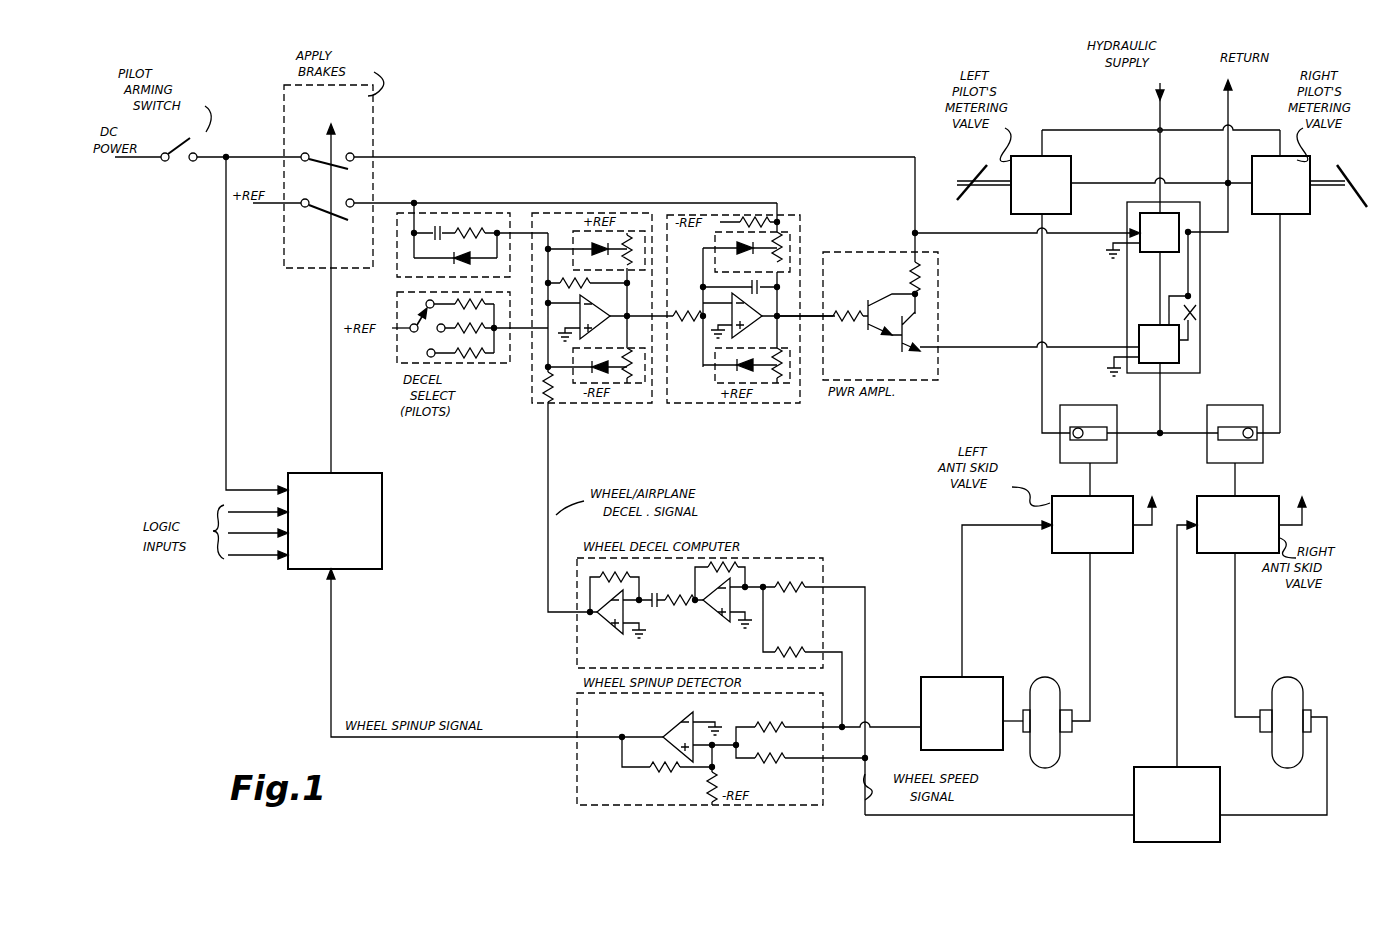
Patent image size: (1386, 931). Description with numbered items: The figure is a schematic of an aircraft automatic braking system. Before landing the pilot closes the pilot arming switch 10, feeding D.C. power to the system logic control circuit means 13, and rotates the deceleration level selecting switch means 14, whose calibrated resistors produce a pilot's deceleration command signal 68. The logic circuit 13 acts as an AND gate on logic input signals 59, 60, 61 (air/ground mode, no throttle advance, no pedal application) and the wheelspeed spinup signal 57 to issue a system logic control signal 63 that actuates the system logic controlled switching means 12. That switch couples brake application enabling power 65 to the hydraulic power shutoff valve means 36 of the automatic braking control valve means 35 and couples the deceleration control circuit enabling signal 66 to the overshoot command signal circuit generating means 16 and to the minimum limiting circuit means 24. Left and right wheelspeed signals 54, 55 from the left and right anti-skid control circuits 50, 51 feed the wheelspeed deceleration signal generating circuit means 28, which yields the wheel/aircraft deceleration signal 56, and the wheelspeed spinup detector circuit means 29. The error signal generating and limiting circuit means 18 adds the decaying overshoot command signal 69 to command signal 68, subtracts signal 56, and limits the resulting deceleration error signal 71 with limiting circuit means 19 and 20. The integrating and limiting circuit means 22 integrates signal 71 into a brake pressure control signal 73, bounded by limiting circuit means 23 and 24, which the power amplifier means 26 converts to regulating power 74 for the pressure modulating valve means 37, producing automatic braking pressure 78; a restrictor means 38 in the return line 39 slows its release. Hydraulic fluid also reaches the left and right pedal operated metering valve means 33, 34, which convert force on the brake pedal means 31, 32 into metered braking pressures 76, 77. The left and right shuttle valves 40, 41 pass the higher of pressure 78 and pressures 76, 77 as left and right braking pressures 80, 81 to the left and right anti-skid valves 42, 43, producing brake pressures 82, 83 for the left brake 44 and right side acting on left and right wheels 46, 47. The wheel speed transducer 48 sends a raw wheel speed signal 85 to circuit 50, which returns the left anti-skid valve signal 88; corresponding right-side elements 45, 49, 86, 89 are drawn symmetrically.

The pilot arming switch 10 is at (186, 145).
The system logic controlled switching means 12 is at (376, 118).
The system logic control circuit means 13 is at (382, 511).
The deceleration level selecting switch means 14 is at (497, 409).
The initial aircraft deceleration overshoot command signal circuit generating means 16 is at (466, 210).
The aircraft deceleration error signal generating and amplitude limiting circuit mea 18 is at (548, 213).
The deceleration error limiting circuit means 19 is at (626, 232).
The deceleration error limiting circuit means 20 is at (632, 386).
The deceleration error signal integrating and pressure control signal limiting circu 22 is at (780, 222).
The maximum brake pressure control signal limiting circuit means 23 is at (794, 380).
The minimum brake pressure control signal limiting circuit means 24 is at (790, 229).
The brake pressure control signal power amplifier means 26 is at (933, 252).
The wheelspeed deceleration signal generating circuit means 28 is at (823, 564).
The wheelspeed spinup detector circuit means 29 is at (576, 772).
The left pilot's brake pedal means 31 is at (964, 178).
The right pilot's brake pedal means 32 is at (1348, 168).
The left pilot's pedal operated pressure metering valve means 33 is at (1071, 164).
The right pilot's pedal operated pressure metering valve means 34 is at (1302, 214).
The automatic braking control valve means 35 is at (1200, 262).
The hydraulic power shutoff valve means 36 is at (1152, 256).
The automatic braking pressure modulating valve means 37 is at (1150, 324).
The hydraulic fluid restrictor means 38 is at (1196, 312).
The automatic braking pressure modulating valve return line 39 is at (1188, 340).
The left shuttle valve 40 is at (1076, 405).
The right shuttle valve 41 is at (1236, 397).
The left anti-skid valve 42 is at (1125, 489).
The right anti-skid valve 43 is at (1280, 495).
The left brake 44 is at (1068, 708).
The right wheel speed transducer 45 is at (1258, 710).
The left wheel 46 is at (1040, 677).
The right wheel 47 is at (1286, 675).
The left anti-skid wheel speed transducer 48 is at (1024, 699).
The right wheel brake 49 is at (1312, 710).
The left anti-skid control circuit 50 is at (978, 677).
The right anti-skid control circuit 51 is at (1138, 766).
The left wheelspeed signal 54 is at (870, 727).
The right wheelspeed signal 55 is at (866, 605).
The wheel/aircraft deceleration signal 56 is at (536, 544).
The wheelspeed spinup signal 57 is at (338, 614).
The logic input signal 59 is at (259, 511).
The logic input signal 60 is at (258, 533).
The logic input signal 61 is at (254, 555).
The system logic control signal 63 is at (336, 438).
The brake application enabling power 65 is at (442, 157).
The deceleration control circuit enabling signal 66 is at (396, 202).
The pilot's deceleration command signal 68 is at (520, 334).
The initial aircraft deceleration overshoot command signal 69 is at (512, 230).
The aircraft deceleration error signal 71 is at (656, 325).
The brake pressure control signal 73 is at (808, 319).
The automatic braking pressure regulating power 74 is at (1076, 347).
The left pilot's metered braking pressure 76 is at (1042, 280).
The right pilot's metered braking pressure 77 is at (1280, 376).
The automatic braking pressure 78 is at (1160, 400).
The left braking pressure 80 is at (1090, 478).
The right braking pressure 81 is at (1235, 478).
The left brake pressure 82 is at (1090, 588).
The right brake pressure 83 is at (1235, 597).
The left raw wheel speed signal 85 is at (1012, 728).
The right wheel speed signal line 86 is at (1327, 754).
The left anti-skid valve signal 88 is at (964, 565).
The right anti skid control line 89 is at (1176, 592).